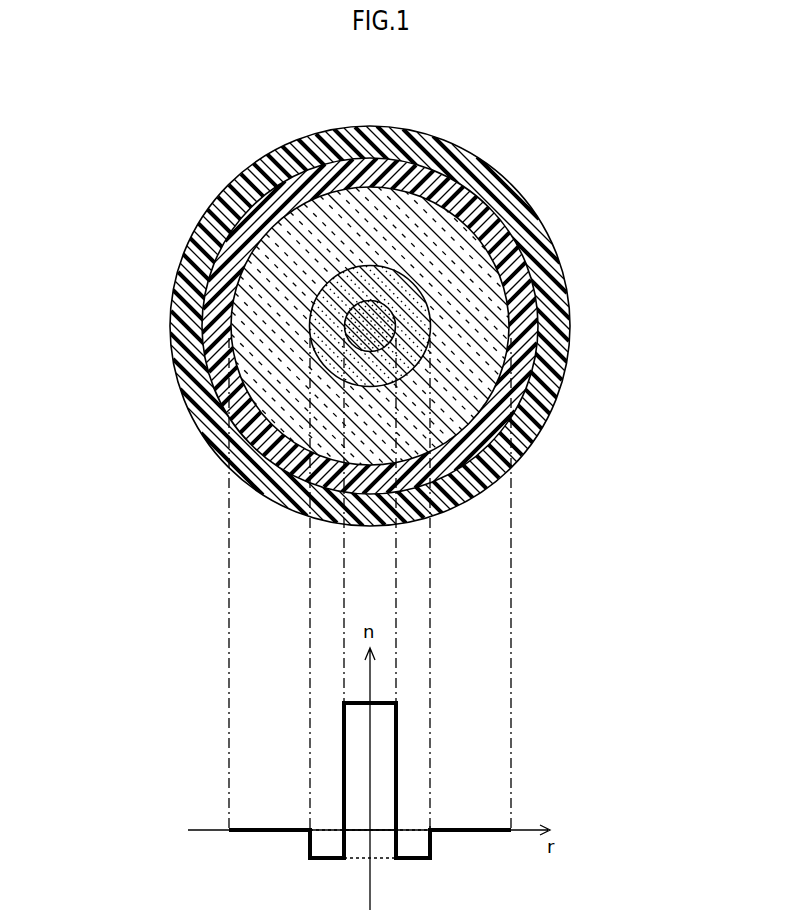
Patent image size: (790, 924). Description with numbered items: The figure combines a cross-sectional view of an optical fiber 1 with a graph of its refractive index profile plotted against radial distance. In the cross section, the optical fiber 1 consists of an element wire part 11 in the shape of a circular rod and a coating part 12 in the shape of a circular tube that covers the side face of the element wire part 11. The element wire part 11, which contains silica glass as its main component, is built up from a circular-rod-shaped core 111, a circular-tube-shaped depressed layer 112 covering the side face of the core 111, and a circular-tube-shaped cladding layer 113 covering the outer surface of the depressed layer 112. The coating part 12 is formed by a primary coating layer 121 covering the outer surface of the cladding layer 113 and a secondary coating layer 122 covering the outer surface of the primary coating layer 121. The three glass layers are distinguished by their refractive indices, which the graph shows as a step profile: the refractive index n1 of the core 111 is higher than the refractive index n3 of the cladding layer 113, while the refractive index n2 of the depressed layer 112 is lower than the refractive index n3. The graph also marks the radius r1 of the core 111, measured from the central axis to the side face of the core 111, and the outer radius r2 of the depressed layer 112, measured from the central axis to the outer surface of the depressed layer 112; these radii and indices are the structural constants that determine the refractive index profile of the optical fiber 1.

The optical fiber 1 is at (573, 156).
The element wire part 11 is at (645, 232).
The core 111 is at (394, 325).
The depressed layer 112 is at (418, 296).
The cladding layer 113 is at (490, 261).
The coating part 12 is at (105, 260).
The primary coating layer 121 is at (213, 271).
The secondary coating layer 122 is at (172, 312).
The refractive index of the core n1 is at (375, 703).
The refractive index of the depressed layer n2 is at (364, 859).
The refractive index of the cladding layer n3 is at (372, 832).
The radius of the core r1 is at (400, 829).
The outer radius of the depressed layer r2 is at (434, 829).